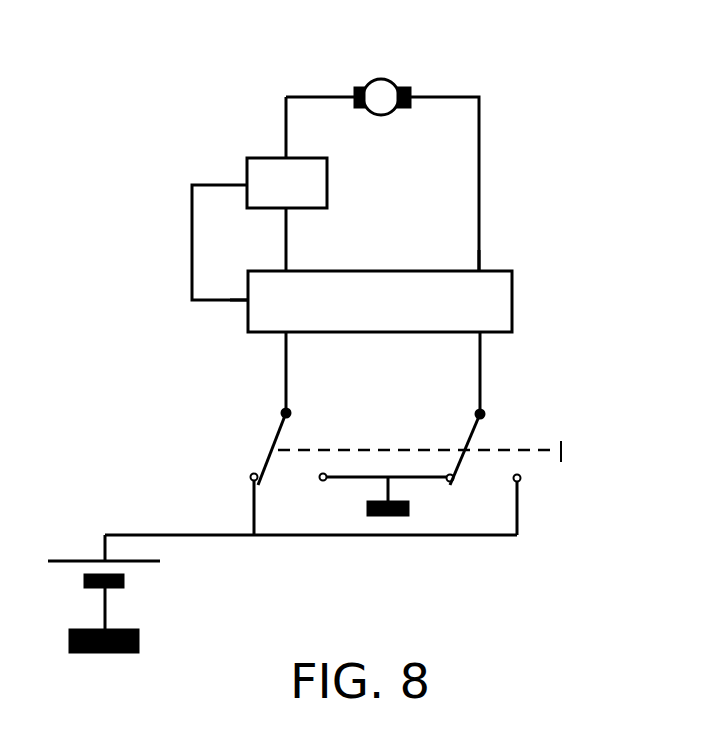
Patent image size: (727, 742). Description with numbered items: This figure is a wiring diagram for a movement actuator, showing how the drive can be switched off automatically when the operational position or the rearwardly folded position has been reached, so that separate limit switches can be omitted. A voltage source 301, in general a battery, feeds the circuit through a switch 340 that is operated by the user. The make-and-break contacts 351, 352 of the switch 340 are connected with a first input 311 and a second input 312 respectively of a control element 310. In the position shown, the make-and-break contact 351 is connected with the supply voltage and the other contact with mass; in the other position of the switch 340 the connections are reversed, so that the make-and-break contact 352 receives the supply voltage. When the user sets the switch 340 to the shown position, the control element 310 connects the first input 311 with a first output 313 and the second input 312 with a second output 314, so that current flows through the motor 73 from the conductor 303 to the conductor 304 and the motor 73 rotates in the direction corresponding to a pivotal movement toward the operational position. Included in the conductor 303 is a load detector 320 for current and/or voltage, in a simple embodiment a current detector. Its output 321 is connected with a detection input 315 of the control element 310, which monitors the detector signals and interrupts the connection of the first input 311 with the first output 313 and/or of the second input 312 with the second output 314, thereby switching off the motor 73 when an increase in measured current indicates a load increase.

The motor 73 is at (391, 80).
The voltage source 301 is at (140, 582).
The conductor 303 is at (285, 117).
The conductor 304 is at (480, 135).
The control element 310 is at (380, 301).
The first input 311 is at (282, 333).
The second input 312 is at (483, 335).
The first output 313 is at (287, 270).
The second output 314 is at (481, 270).
The detection input 315 is at (246, 305).
The load detector 320 is at (287, 183).
The output 321 is at (247, 178).
The switch 340 is at (577, 450).
The make-and-break contact 351 is at (289, 412).
The make-and-break contact 352 is at (478, 412).